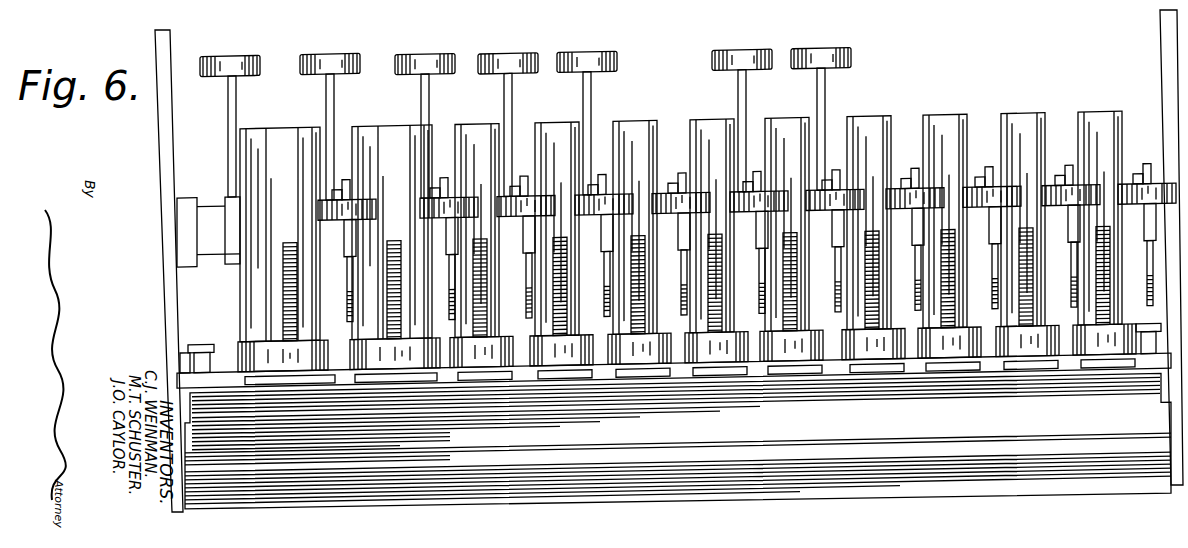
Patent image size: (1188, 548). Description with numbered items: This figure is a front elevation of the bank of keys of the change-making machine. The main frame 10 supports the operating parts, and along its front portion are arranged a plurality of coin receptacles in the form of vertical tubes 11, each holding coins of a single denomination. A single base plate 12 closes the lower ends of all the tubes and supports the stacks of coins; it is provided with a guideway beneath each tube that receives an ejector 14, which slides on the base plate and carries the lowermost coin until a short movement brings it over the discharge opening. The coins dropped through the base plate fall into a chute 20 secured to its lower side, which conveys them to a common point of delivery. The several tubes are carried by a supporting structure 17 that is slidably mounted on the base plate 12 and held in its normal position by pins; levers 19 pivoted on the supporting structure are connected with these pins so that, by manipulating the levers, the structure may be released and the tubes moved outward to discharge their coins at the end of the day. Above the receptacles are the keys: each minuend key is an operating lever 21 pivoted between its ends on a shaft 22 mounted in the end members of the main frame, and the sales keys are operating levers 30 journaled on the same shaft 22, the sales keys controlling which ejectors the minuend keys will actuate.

The main frame 10 is at (172, 130).
The vertical tubes 11 is at (267, 138).
The base plate 12 is at (588, 383).
The ejector 14 is at (724, 376).
The supporting structure 17 is at (224, 374).
The levers 19 is at (200, 344).
The chute 20 is at (500, 447).
The operating lever 21 is at (420, 102).
The shaft 22 is at (210, 206).
The operating levers 30 is at (443, 180).